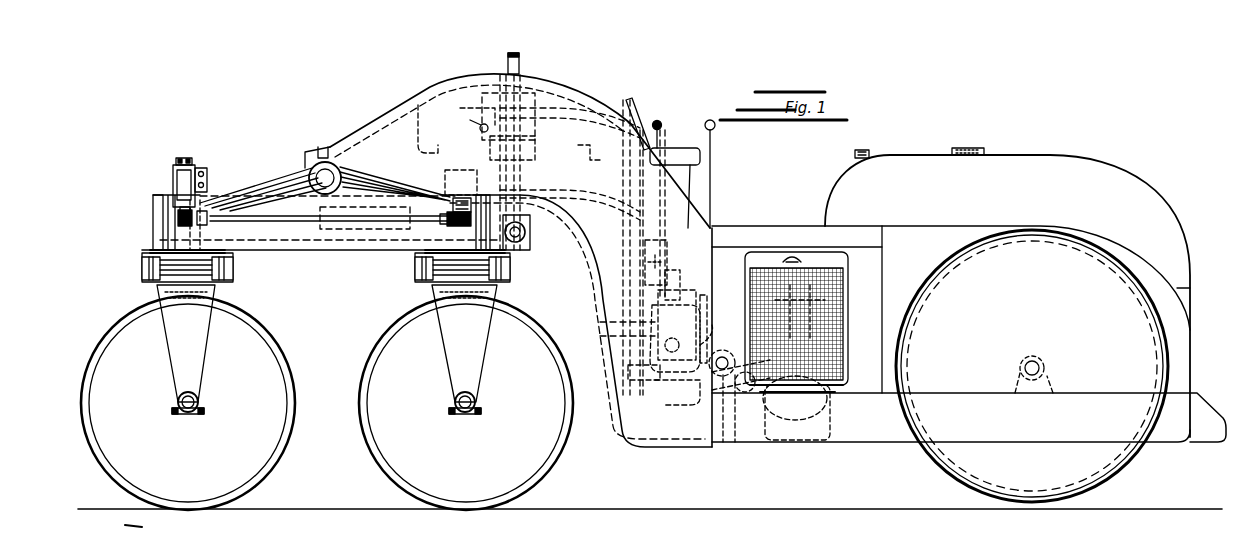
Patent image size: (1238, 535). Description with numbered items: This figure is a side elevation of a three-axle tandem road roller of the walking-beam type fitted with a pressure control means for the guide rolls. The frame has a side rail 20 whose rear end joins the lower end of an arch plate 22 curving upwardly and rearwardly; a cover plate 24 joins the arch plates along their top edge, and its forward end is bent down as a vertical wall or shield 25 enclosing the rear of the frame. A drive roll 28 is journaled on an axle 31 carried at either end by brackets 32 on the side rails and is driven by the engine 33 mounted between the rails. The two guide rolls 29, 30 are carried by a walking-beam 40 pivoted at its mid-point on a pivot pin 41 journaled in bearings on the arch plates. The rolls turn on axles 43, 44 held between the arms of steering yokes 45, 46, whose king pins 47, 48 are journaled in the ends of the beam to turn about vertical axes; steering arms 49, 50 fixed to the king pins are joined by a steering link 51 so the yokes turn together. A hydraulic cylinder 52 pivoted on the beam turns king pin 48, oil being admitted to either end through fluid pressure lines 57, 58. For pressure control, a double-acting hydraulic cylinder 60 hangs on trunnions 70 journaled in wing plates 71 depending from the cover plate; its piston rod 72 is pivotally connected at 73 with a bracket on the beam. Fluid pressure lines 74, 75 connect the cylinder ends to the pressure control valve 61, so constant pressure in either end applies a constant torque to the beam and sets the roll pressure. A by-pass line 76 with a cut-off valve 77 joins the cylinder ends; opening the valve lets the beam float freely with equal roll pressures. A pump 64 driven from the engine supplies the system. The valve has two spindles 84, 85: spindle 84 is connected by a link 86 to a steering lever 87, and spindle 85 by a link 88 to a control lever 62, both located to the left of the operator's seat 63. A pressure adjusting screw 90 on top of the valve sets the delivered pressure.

The side rail 20 is at (858, 446).
The arch plate 22 is at (680, 450).
The cover plate 24 is at (460, 92).
The vertical wall or shield 25 is at (612, 413).
The drive roll 28 is at (1122, 470).
The guide roll 29 is at (218, 500).
The guide roll 30 is at (494, 500).
The axle 31 is at (1040, 362).
The bracket 32 is at (1050, 383).
The engine 33 is at (843, 337).
The walking-beam 40 is at (272, 182).
The pivot pin 41 is at (330, 170).
The axle 43 is at (188, 402).
The axle 44 is at (465, 402).
The steering yoke 45 is at (200, 363).
The steering yoke 46 is at (475, 358).
The king pin 47 is at (152, 232).
The king pin 48 is at (505, 248).
The steering arm 49 is at (180, 178).
The steering arm 50 is at (455, 174).
The steering link 51 is at (238, 216).
The hydraulic cylinder 52 is at (355, 240).
The fluid pressure line 57 is at (712, 300).
The fluid pressure line 58 is at (702, 300).
The double-acting hydraulic cylinder 60 is at (528, 143).
The pressure control valve 61 is at (628, 373).
The control lever 62 is at (664, 213).
The operator's seat 63 is at (672, 150).
The pump 64 is at (740, 345).
The trunnion 70 is at (492, 143).
The wing plate 71 is at (586, 160).
The piston rod 72 is at (490, 213).
The pivotal connection 73 is at (526, 232).
The fluid pressure line 74 is at (550, 115).
The fluid pressure line 75 is at (533, 196).
The by-pass line 76 is at (482, 108).
The cut-off valve 77 is at (468, 125).
The valve spindle 84 is at (680, 360).
The valve spindle 85 is at (610, 336).
The link 86 is at (688, 278).
The steering lever 87 is at (661, 124).
The link 88 is at (660, 265).
The pressure adjusting screw 90 is at (610, 322).